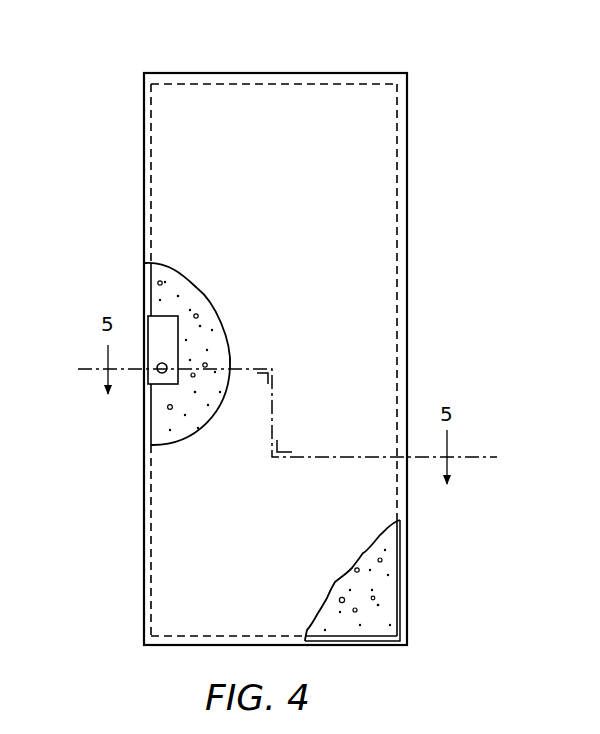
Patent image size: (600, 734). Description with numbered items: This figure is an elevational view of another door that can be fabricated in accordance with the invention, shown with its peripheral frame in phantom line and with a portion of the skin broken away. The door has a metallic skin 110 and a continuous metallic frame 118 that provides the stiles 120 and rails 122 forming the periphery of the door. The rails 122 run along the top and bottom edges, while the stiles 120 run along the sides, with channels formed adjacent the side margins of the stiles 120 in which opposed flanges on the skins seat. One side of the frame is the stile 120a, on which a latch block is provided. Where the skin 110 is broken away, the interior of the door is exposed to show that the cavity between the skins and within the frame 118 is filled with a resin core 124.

The metallic skin 110 is at (364, 192).
The continuous metallic frame 118 is at (412, 540).
The stile 120 is at (408, 338).
The stile 120a is at (143, 492).
The rail 122 is at (363, 73).
The resin core 124 is at (376, 590).